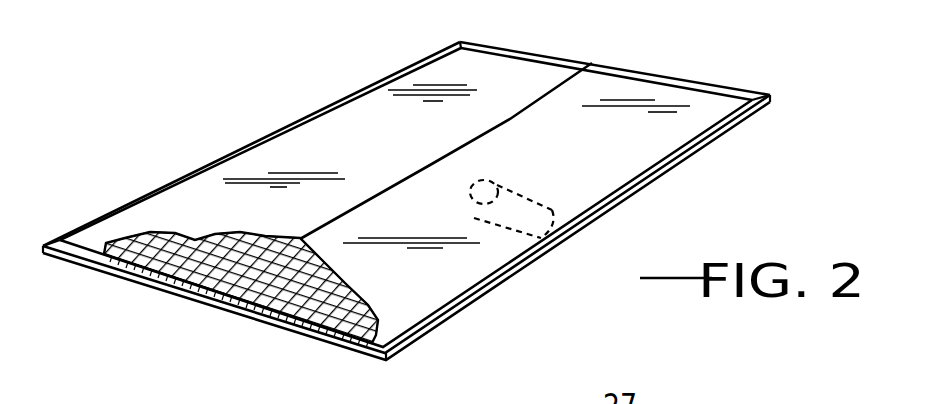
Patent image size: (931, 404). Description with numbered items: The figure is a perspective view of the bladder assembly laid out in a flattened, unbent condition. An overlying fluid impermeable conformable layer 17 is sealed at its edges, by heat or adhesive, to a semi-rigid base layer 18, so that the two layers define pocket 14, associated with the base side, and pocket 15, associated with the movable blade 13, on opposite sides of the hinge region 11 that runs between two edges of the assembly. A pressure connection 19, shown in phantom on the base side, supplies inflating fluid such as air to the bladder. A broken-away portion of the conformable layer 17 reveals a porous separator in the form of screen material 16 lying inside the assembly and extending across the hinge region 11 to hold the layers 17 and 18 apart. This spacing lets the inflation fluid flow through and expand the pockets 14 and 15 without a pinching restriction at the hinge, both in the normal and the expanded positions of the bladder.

The hinge 11 is at (543, 100).
The movable blade portion 13 is at (340, 100).
The pocket 14 is at (655, 118).
The pocket 15 is at (253, 183).
The screen material 16 is at (200, 273).
The conformable layer 17 is at (578, 69).
The semi-rigid base layer 18 is at (306, 348).
The pressure connection 19 is at (522, 197).